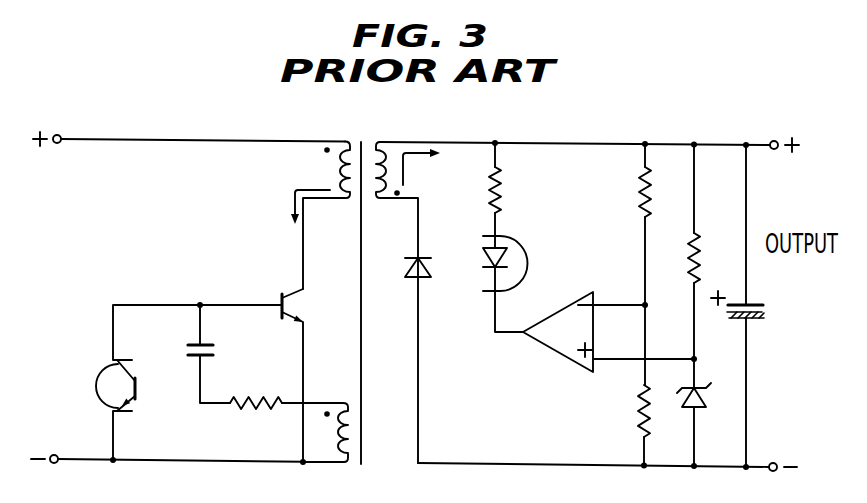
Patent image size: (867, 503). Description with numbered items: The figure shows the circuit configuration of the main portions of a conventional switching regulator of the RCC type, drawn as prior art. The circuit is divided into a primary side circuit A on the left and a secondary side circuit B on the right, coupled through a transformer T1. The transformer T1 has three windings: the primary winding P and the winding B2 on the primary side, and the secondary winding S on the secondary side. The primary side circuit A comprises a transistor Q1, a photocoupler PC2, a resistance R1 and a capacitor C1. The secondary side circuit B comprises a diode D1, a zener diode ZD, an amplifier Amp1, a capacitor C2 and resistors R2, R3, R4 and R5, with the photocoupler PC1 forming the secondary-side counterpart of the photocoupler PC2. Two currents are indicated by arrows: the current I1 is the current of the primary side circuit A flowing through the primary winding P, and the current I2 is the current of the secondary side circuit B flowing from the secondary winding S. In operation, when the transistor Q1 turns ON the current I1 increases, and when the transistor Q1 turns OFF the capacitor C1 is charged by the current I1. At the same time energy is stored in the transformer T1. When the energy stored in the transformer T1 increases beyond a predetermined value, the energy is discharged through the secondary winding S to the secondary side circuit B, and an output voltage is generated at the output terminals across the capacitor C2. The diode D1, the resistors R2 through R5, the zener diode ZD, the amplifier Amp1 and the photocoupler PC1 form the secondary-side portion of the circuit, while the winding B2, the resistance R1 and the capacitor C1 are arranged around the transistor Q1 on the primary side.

The primary side circuit A is at (203, 118).
The secondary side circuit B is at (575, 122).
The transformer T1 is at (368, 283).
The primary winding P is at (326, 196).
The secondary winding S is at (398, 181).
The winding (B) B2 is at (324, 416).
The primary current I1 is at (310, 187).
The secondary current I2 is at (421, 169).
The transistor Q1 is at (266, 375).
The capacitor C1 is at (218, 352).
The resistance R1 is at (266, 426).
The photocoupler PC2 is at (132, 384).
The diode D1 is at (435, 359).
The resistor R2 is at (512, 194).
The photocoupler PC1 is at (524, 280).
The amplifier Amp1 is at (595, 343).
The resistor R3 is at (660, 263).
The resistor R4 is at (628, 427).
The resistor R5 is at (678, 265).
The zener diode ZD is at (709, 426).
The capacitor C2 is at (756, 306).